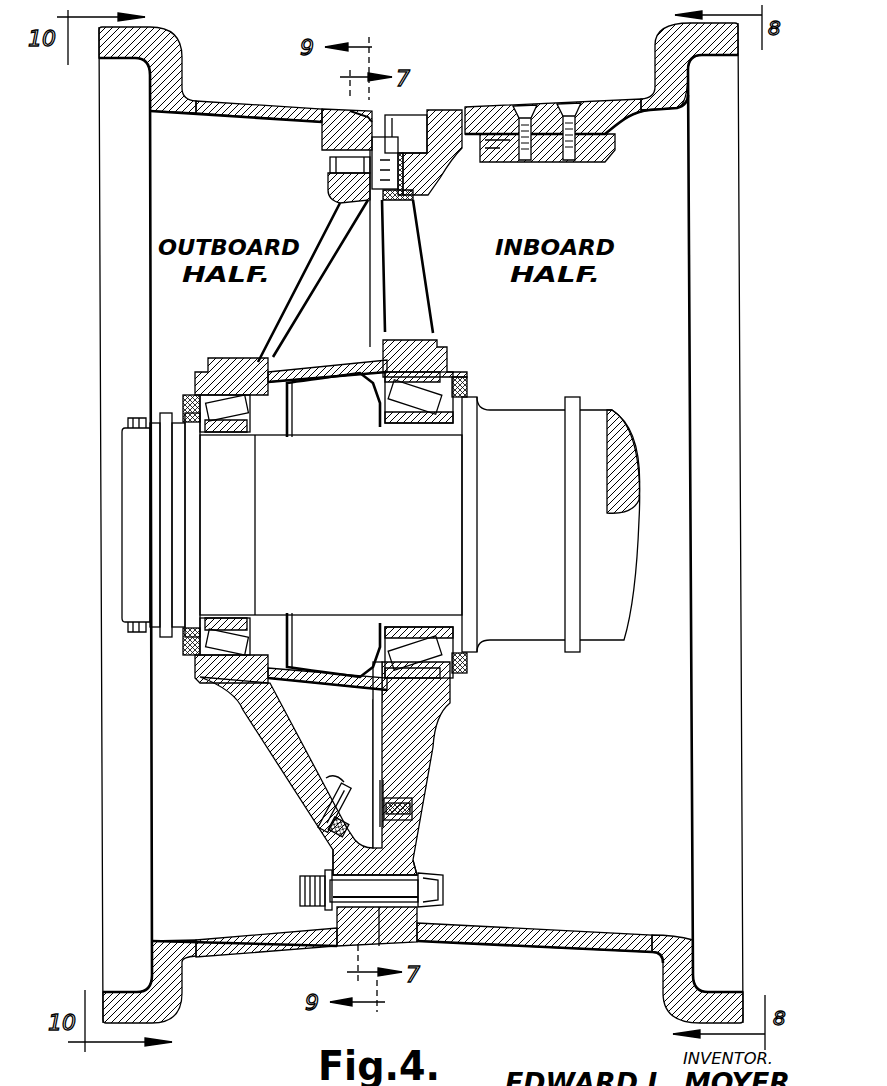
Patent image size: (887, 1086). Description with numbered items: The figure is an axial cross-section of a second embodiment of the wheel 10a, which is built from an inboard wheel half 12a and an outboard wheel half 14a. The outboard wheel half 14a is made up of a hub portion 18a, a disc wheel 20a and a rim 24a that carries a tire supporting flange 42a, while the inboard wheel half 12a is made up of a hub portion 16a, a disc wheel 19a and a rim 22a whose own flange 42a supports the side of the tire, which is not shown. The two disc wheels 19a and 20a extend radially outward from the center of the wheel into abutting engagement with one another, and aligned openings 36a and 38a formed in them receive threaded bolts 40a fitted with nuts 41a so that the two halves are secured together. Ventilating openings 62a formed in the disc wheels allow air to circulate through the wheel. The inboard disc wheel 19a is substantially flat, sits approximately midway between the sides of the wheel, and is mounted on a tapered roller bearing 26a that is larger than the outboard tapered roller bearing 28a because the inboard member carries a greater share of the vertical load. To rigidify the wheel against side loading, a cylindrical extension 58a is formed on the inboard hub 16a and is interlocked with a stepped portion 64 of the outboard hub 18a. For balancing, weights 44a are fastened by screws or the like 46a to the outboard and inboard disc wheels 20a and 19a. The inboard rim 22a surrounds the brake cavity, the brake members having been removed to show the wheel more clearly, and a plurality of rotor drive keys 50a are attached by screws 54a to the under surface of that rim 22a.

The wheel 10a is at (421, 522).
The inboard wheel half 12a is at (432, 170).
The outboard wheel half 14a is at (330, 132).
The hub portion 16a is at (440, 340).
The hub portion 18a is at (215, 375).
The disc wheel 19a is at (420, 236).
The disc wheel 20a is at (313, 240).
The rim 22a is at (488, 108).
The rim 24a is at (240, 122).
The tapered roller bearing 26a is at (420, 425).
The tapered roller bearing 28a is at (222, 440).
The opening 36a is at (410, 860).
The opening 38a is at (347, 925).
The threaded bolt 40a is at (373, 877).
The nut 41a is at (308, 876).
The tire supporting flange 42a is at (162, 47).
The weight 44a is at (382, 800).
The screw 46a is at (320, 830).
The rotor drive key 50a is at (600, 155).
The screw 54a is at (570, 104).
The cylindrical extension 58a is at (322, 372).
The ventilating opening 62a is at (250, 355).
The stepped portion 64 is at (300, 402).